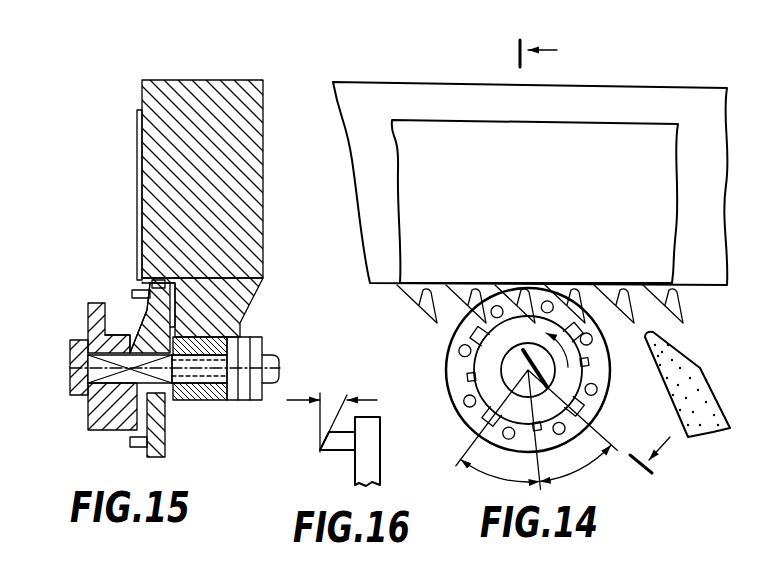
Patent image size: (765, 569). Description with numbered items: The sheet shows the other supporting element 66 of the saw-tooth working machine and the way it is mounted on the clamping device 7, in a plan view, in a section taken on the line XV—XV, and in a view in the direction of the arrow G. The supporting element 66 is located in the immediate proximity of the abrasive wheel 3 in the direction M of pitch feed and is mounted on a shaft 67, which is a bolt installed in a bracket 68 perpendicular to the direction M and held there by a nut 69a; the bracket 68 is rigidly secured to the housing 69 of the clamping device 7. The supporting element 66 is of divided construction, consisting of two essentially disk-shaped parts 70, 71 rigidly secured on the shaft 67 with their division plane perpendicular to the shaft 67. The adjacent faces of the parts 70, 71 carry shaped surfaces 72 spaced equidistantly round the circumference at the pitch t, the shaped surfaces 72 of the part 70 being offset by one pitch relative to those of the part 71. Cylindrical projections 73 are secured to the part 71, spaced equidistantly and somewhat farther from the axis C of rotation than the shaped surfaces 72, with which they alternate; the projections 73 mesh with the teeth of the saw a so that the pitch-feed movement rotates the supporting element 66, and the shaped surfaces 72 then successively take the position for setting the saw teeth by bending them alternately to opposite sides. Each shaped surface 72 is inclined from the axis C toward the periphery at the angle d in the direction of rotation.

In FIG. 15, the clamping device 7 is at (214, 80).
In FIG. 14, the clamping device 7 is at (416, 82).
In FIG. 15, the housing of the clamping device 69 is at (188, 79).
In FIG. 14, the housing of the clamping device 69 is at (650, 93).
In FIG. 15, the nut 69a is at (258, 401).
In FIG. 15, the band saw a is at (136, 132).
In FIG. 14, the band saw a is at (663, 293).
In FIG. 15, the other supporting element 66 is at (87, 329).
In FIG. 14, the other supporting element 66 is at (449, 351).
In FIG. 15, the shaft 67 is at (70, 350).
In FIG. 14, the shaft 67 is at (522, 352).
In FIG. 15, the bracket 68 is at (218, 405).
In FIG. 15, the part of the supporting element 70 is at (103, 431).
In FIG. 14, the part of the supporting element 70 is at (472, 390).
In FIG. 15, the part of the supporting element 71 is at (168, 300).
In FIG. 14, the part of the supporting element 71 is at (608, 402).
In FIG. 15, the shaped surfaces 72 is at (132, 324).
In FIG. 16, the shaped surfaces 72 is at (323, 435).
In FIG. 14, the shaped surfaces 72 is at (465, 375).
In FIG. 15, the projections 73 is at (138, 292).
In FIG. 14, the projections 73 is at (466, 414).
In FIG. 14, the abrasive wheel 3 is at (701, 383).
In FIG. 15, the axis of rotation C is at (74, 385).
In FIG. 14, the arrow G is at (647, 363).
In FIG. 14, the direction of pitch feed M is at (554, 197).
In FIG. 16, the angle of inclination d is at (332, 408).
In FIG. 14, the pitch t is at (536, 429).
In FIG. 14, the section line XV— XV is at (599, 257).